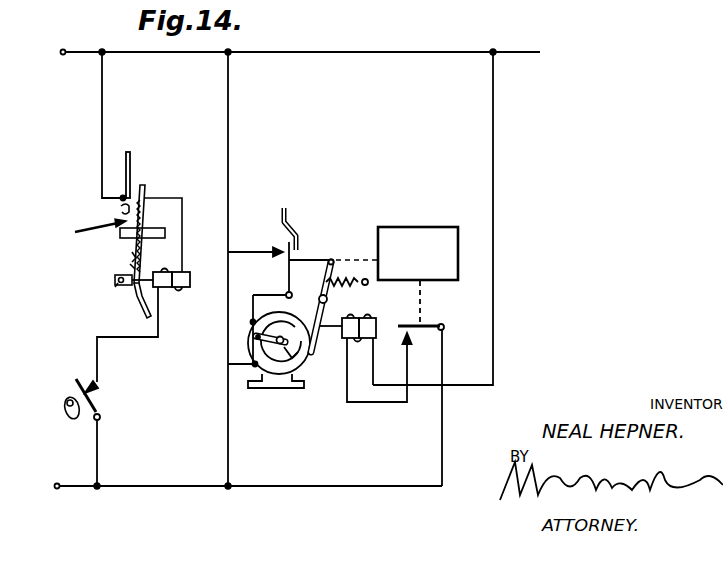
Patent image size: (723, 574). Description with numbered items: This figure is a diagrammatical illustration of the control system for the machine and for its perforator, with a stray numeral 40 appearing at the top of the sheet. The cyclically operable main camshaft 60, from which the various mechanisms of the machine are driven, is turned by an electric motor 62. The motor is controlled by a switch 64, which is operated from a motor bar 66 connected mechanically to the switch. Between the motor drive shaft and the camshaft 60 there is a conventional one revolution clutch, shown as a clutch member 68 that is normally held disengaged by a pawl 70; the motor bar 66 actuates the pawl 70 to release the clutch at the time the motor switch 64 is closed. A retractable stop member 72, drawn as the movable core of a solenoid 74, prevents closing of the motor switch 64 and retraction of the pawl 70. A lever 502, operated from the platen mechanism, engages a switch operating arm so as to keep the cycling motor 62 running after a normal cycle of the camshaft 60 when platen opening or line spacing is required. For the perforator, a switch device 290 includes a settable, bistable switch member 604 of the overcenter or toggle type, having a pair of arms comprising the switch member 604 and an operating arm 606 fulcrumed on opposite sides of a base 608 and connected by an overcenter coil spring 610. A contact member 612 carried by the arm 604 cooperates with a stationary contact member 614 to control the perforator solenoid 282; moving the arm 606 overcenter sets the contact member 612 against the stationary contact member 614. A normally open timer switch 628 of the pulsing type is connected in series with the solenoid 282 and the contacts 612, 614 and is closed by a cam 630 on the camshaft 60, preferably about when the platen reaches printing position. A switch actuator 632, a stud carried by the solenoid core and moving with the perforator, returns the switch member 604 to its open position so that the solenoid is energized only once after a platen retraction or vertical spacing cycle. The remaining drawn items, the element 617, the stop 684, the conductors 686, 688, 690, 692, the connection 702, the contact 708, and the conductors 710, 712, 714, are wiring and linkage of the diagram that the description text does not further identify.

The frame 40 is at (46, 6).
The main camshaft 60 is at (66, 405).
The electric motor 62 is at (283, 370).
The switch 64 is at (289, 270).
The motor bar 66 is at (403, 228).
The clutch member 68 is at (253, 322).
The pawl 70 is at (320, 345).
The retractable stop member 72 is at (336, 324).
The solenoid 74 is at (378, 327).
The solenoid 282 is at (192, 279).
The switch device 290 is at (91, 236).
The lever 502 is at (303, 205).
The switch member 604 is at (146, 213).
The arm 606 is at (133, 267).
The base 608 is at (120, 233).
The overcenter coil spring 610 is at (136, 256).
The contact member 612 is at (126, 207).
The stationary contact member 614 is at (131, 165).
The lever arm 617 is at (147, 314).
The timer switch 628 is at (96, 403).
The cam 630 is at (78, 421).
The switch actuator 632 is at (121, 283).
The stop 684 is at (121, 290).
The conductor 686 is at (272, 487).
The conductor 688 is at (355, 55).
The conductor 690 is at (228, 462).
The conductor 692 is at (228, 157).
The connection 702 is at (354, 258).
The contact 708 is at (432, 326).
The conductor 710 is at (442, 456).
The conductor 712 is at (395, 405).
The conductor 714 is at (494, 312).